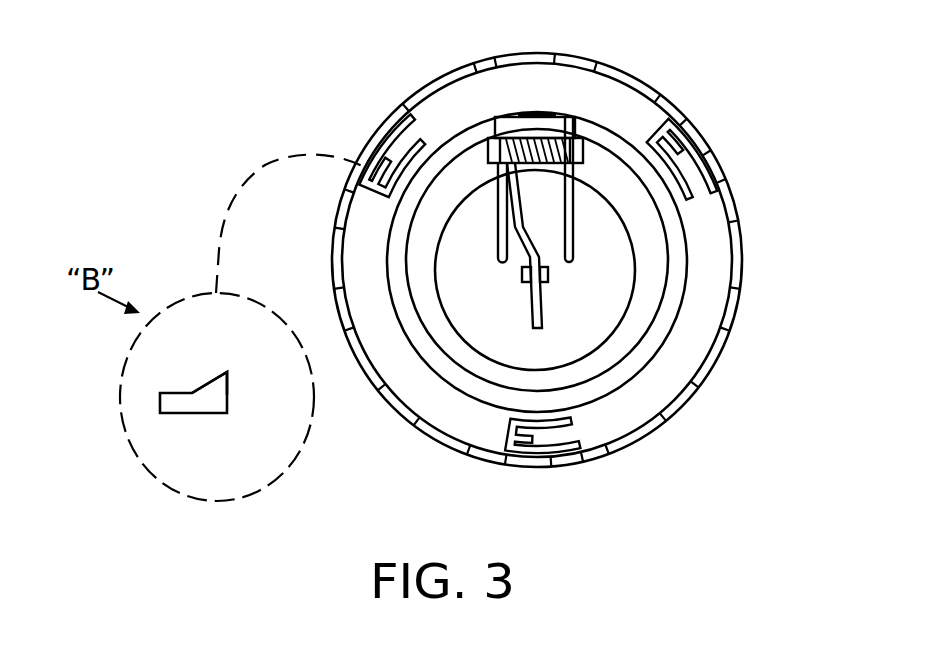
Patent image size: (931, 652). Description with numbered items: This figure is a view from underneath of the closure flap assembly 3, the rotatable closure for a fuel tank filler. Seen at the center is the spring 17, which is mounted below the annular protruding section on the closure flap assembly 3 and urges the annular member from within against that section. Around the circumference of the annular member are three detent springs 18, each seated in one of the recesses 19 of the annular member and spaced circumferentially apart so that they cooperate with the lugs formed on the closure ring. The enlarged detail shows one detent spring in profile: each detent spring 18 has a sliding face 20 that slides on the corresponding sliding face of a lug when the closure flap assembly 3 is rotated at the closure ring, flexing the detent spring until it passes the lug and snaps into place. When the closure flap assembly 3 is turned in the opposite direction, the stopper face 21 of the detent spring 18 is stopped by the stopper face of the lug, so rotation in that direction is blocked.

The closure flap assembly 3 is at (740, 90).
The spring 17 is at (542, 305).
The detent springs 18 is at (381, 153).
The recesses 19 is at (668, 124).
The sliding faces 20 is at (207, 382).
The stopper face 21 is at (228, 390).